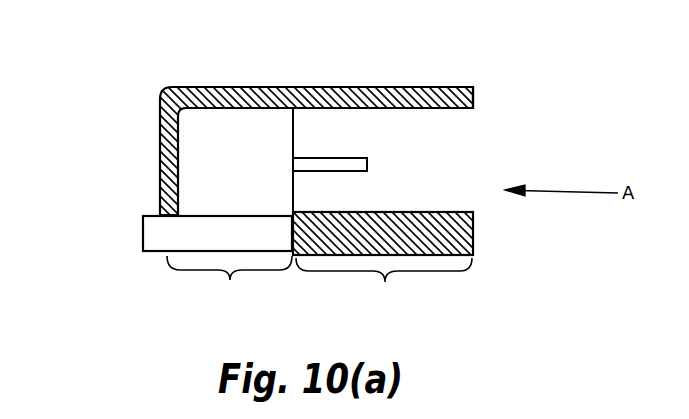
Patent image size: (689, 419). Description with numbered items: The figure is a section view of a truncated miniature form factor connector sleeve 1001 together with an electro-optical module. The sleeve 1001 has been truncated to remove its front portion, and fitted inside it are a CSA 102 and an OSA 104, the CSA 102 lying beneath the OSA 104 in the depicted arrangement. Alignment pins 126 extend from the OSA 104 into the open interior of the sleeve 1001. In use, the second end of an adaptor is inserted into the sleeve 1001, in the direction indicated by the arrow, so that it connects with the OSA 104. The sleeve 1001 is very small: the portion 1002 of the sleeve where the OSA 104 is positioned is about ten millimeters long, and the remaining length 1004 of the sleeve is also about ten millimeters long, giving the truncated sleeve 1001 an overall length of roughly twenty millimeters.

The OSA 104 is at (219, 108).
The alignment pins 126 is at (330, 158).
The sleeve 1001 is at (473, 90).
The CSA 102 is at (143, 233).
The portion of the sleeve 1002 is at (229, 284).
The remaining length of the sleeve 1004 is at (383, 263).